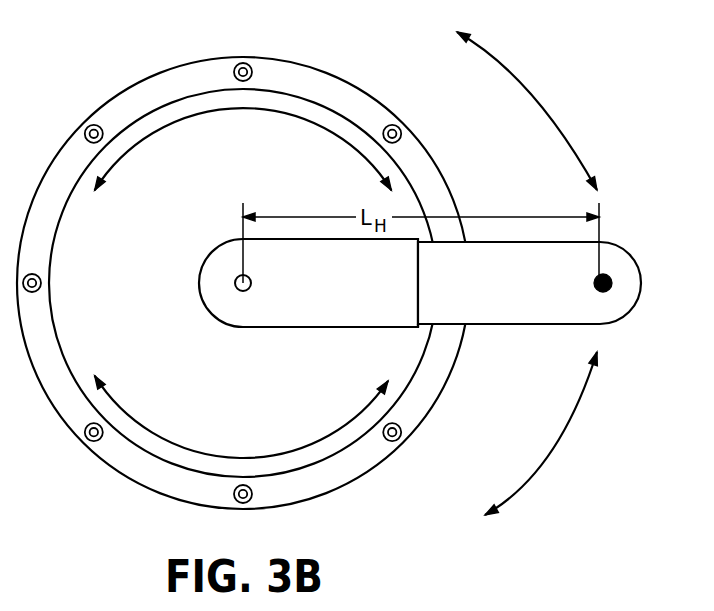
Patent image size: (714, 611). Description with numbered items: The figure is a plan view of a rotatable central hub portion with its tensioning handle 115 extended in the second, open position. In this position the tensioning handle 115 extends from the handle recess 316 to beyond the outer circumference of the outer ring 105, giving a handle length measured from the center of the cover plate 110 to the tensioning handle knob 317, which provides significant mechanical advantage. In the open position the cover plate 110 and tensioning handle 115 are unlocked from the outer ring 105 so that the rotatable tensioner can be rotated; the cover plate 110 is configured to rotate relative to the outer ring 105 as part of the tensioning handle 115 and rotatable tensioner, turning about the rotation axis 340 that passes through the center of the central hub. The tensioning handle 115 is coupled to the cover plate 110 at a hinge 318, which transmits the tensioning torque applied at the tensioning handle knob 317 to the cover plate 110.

The outer ring 105 is at (330, 482).
The cover plate 110 is at (221, 381).
The tensioning handle 115 is at (503, 292).
The handle recess 316 is at (323, 290).
The tensioning handle knob 317 is at (608, 290).
The hinge 318 is at (421, 327).
The rotation axis 340 is at (248, 290).